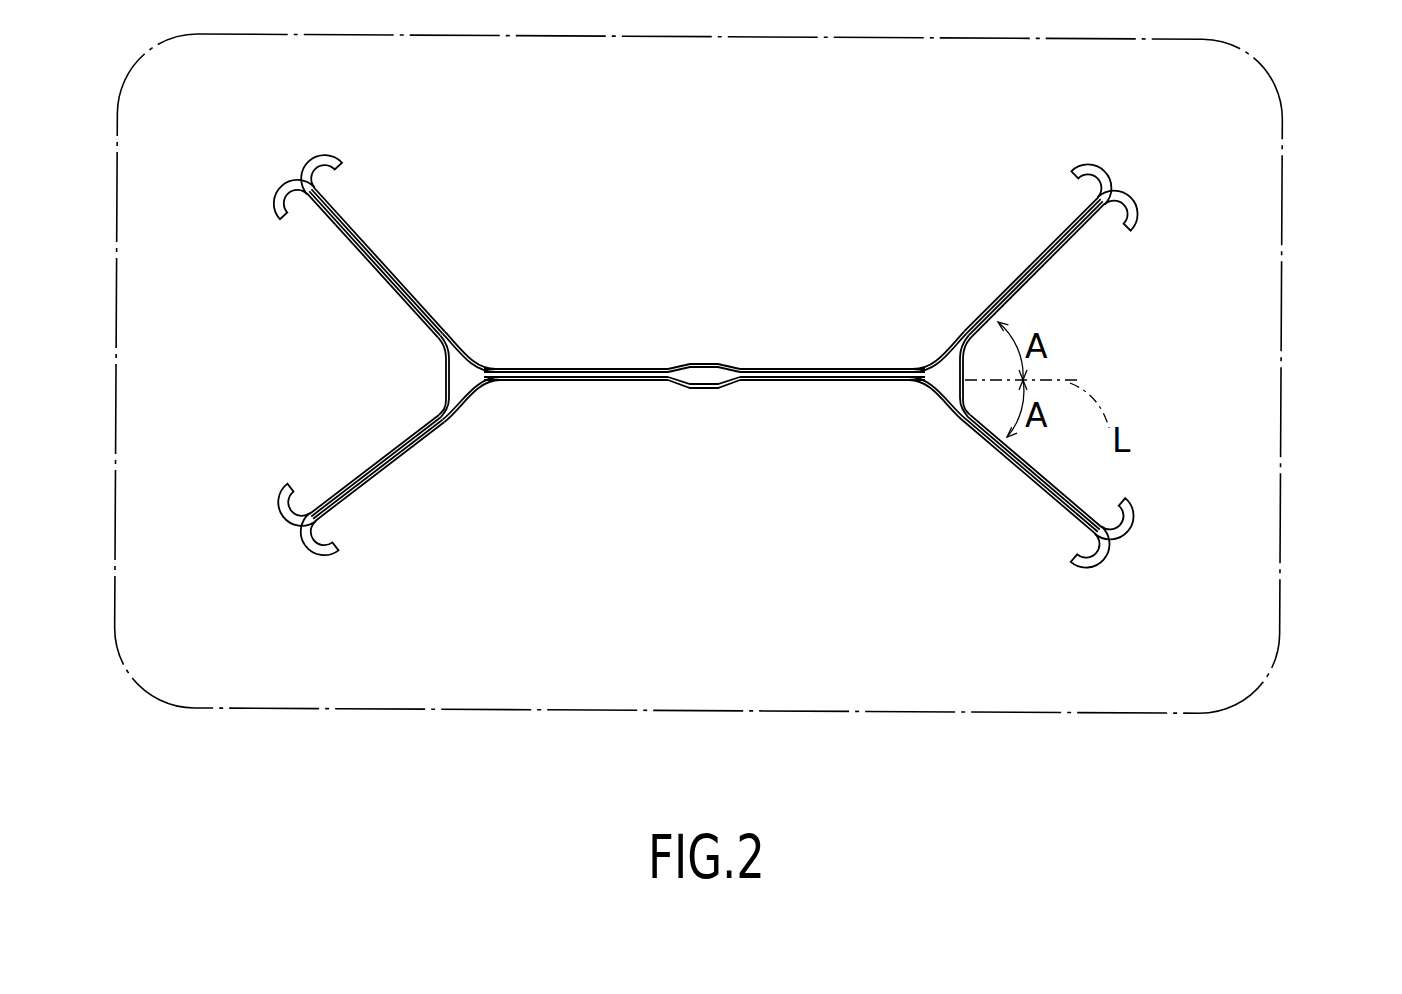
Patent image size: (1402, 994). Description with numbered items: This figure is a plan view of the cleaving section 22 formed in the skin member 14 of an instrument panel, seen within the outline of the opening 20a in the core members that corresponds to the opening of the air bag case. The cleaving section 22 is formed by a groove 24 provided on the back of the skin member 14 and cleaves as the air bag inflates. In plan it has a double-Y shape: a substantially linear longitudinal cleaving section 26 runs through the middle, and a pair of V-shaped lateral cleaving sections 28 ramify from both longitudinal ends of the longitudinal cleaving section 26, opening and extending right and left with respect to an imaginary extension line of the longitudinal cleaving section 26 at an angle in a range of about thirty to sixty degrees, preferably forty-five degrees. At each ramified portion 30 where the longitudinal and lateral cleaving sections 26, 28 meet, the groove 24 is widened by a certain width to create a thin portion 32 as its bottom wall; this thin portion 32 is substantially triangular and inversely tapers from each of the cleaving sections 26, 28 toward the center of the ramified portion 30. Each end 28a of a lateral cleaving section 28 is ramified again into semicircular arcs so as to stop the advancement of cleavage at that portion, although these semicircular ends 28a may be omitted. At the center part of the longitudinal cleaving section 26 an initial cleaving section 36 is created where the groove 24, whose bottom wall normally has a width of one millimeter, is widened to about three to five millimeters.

The skin member 14 is at (711, 147).
The opening 20a is at (1287, 466).
The cleaving section 22 is at (591, 357).
The groove 24 is at (797, 373).
The longitudinal cleaving section 26 is at (704, 378).
The lateral cleaving section 28 is at (398, 435).
The end 28a is at (322, 174).
The ramified portion 30 is at (484, 348).
The thin portion 32 is at (465, 378).
The initial cleaving section 36 is at (710, 379).